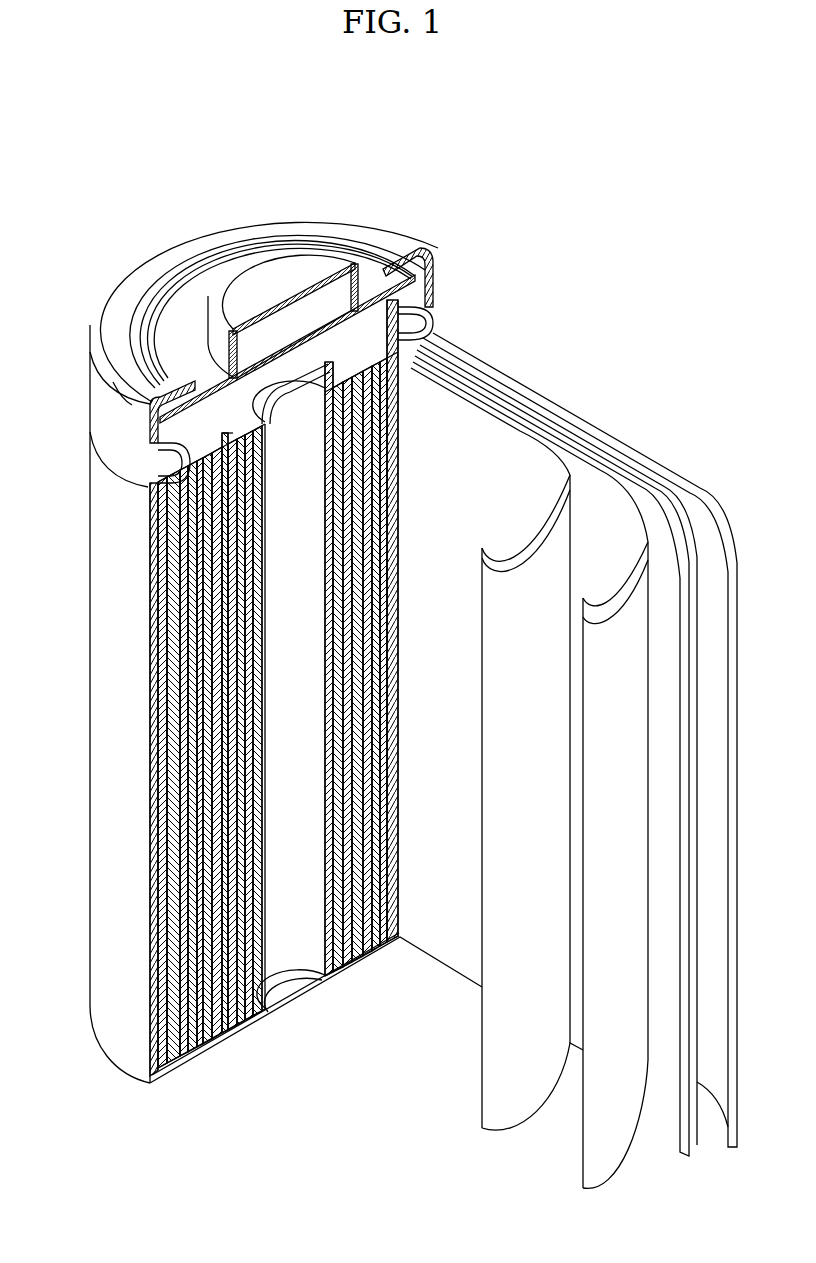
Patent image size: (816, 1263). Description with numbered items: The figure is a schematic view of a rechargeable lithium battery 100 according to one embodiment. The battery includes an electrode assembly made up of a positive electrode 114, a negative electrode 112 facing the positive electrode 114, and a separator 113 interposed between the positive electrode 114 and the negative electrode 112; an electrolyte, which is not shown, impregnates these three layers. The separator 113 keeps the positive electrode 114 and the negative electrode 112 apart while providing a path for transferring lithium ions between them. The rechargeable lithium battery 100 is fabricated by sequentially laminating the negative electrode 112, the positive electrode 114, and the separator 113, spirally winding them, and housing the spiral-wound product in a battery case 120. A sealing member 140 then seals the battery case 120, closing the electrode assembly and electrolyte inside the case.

The rechargeable lithium battery 100 is at (497, 213).
The negative electrode 112 is at (700, 508).
The separator 113 is at (507, 423).
The positive electrode 114 is at (578, 463).
The battery case 120 is at (90, 598).
The sealing member 140 is at (263, 277).